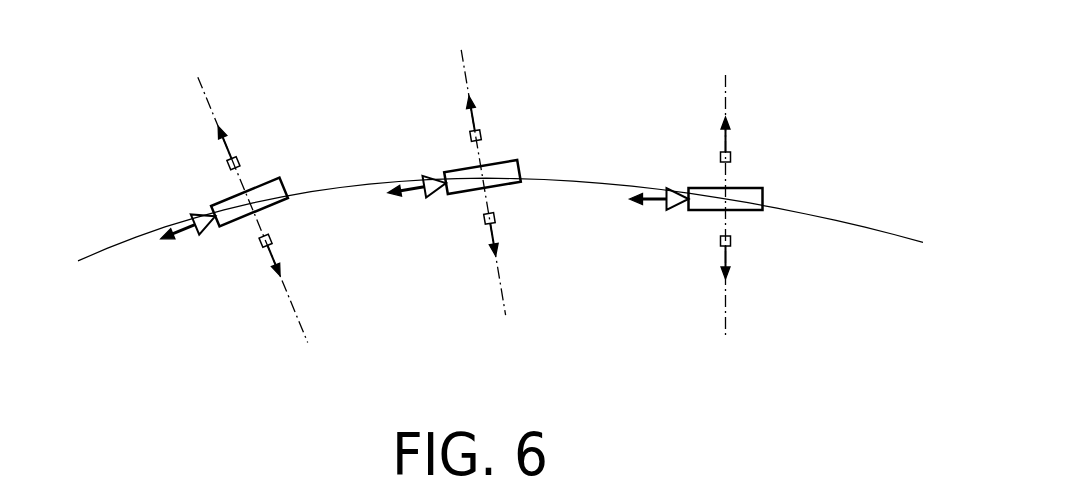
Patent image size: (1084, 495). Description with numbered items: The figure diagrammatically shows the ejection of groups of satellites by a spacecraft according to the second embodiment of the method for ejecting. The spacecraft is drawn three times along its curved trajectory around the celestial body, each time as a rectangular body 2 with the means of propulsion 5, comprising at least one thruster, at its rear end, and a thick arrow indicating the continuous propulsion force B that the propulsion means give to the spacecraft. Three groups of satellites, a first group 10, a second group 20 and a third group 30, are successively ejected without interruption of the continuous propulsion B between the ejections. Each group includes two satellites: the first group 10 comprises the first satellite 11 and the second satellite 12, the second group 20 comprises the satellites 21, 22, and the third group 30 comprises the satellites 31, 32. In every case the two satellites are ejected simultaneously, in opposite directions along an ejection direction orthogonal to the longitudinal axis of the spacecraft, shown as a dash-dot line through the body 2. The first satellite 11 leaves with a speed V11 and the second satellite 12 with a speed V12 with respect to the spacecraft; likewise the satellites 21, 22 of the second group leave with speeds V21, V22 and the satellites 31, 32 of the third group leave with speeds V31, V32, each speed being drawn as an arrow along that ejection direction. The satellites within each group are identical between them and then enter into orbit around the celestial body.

The body 2 is at (267, 190).
The means of propulsion 5 is at (207, 235).
The first group of satellites 10 is at (268, 209).
The first satellite 11 is at (233, 163).
The second satellite 12 is at (265, 240).
The second group of satellites 20 is at (509, 182).
The satellite of the second group 21 is at (476, 136).
The satellite of the second group 22 is at (490, 219).
The third group of satellites 30 is at (787, 205).
The satellite of the third group 31 is at (726, 157).
The satellite of the third group 32 is at (726, 241).
The continuous propulsion force B is at (177, 223).
The speed of the first satellite V11 is at (225, 143).
The speed of the second satellite V12 is at (283, 247).
The speed of satellite 21 V21 is at (472, 113).
The speed of satellite 22 V22 is at (505, 225).
The speed of satellite 31 V31 is at (725, 134).
The speed of satellite 32 V32 is at (725, 262).